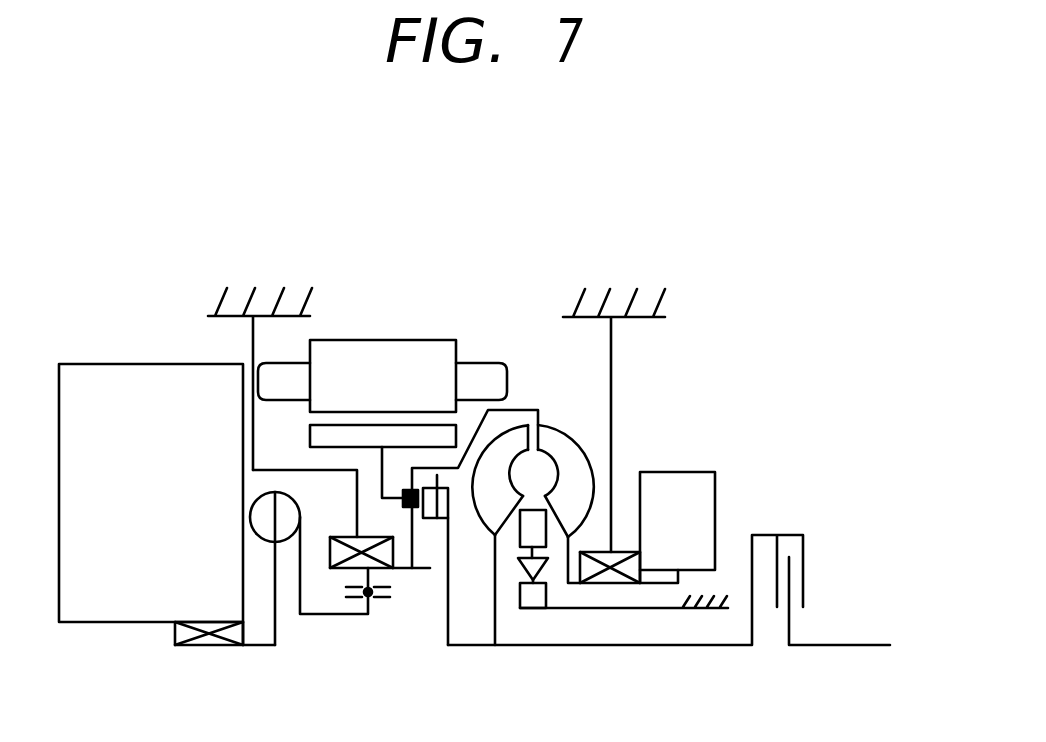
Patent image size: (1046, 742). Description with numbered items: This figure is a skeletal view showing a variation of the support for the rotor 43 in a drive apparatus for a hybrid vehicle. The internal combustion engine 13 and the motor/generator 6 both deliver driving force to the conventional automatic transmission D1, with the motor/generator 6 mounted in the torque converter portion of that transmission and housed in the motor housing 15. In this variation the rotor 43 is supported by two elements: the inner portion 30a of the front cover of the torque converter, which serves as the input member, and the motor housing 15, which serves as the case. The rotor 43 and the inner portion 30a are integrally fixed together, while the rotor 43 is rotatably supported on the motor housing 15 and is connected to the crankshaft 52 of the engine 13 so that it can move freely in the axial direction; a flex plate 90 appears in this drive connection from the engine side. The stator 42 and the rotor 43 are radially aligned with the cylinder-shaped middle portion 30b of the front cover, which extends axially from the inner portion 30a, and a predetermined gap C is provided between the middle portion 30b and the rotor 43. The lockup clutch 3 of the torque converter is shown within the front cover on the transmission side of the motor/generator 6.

The internal combustion engine 13 is at (152, 364).
The motor housing 15 is at (215, 327).
The motor/generator 6 is at (383, 298).
The rotor 43 is at (320, 422).
The middle portion 30b is at (428, 467).
The stator 42 is at (480, 363).
The gap C is at (408, 457).
The automatic transmission D1 is at (561, 409).
The flex plate 90 is at (257, 494).
The inner portion 30a is at (412, 526).
The lockup clutch 3 is at (449, 507).
The crankshaft 52 is at (255, 648).